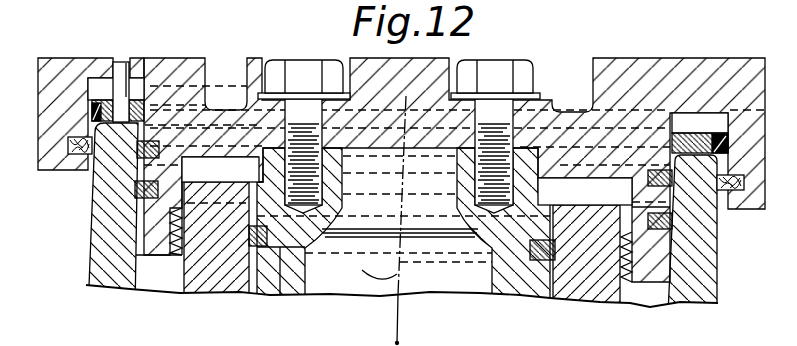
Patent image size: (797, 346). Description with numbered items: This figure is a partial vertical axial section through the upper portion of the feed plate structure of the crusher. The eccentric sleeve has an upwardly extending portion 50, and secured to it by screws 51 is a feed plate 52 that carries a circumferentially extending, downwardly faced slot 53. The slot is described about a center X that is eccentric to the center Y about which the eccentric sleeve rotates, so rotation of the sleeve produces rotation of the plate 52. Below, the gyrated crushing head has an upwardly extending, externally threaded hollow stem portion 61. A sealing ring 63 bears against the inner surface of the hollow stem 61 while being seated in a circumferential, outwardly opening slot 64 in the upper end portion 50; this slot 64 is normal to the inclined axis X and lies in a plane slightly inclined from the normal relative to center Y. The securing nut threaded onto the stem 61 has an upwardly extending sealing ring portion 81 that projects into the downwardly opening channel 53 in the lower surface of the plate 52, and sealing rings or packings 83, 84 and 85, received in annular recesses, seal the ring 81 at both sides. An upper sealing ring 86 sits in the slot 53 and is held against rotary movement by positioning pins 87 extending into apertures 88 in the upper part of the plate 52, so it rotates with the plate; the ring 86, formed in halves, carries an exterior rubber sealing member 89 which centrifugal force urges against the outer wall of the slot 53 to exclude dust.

The upwardly extending portion 50 is at (492, 273).
The screws 51 is at (302, 75).
The feed plate 52 is at (407, 105).
The downwardly faced slot 53 is at (97, 85).
The hollow stem portion 61 is at (222, 283).
The sealing ring 63 is at (263, 297).
The outwardly opening slot 64 is at (282, 297).
The sealing ring portion 81 is at (113, 272).
The sealing ring 83 is at (78, 154).
The sealing ring 84 is at (138, 150).
The sealing ring 85 is at (184, 171).
The upper sealing ring 86 is at (135, 103).
The positioning pins 87 is at (126, 75).
The apertures 88 is at (118, 62).
The exterior sealing member 89 is at (92, 108).